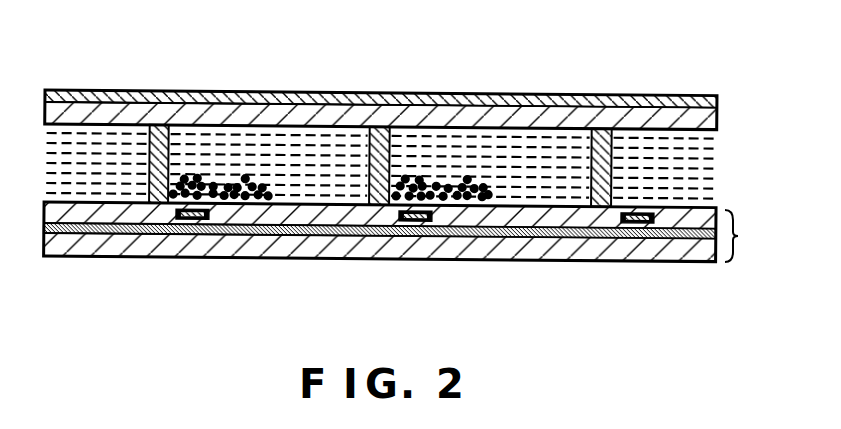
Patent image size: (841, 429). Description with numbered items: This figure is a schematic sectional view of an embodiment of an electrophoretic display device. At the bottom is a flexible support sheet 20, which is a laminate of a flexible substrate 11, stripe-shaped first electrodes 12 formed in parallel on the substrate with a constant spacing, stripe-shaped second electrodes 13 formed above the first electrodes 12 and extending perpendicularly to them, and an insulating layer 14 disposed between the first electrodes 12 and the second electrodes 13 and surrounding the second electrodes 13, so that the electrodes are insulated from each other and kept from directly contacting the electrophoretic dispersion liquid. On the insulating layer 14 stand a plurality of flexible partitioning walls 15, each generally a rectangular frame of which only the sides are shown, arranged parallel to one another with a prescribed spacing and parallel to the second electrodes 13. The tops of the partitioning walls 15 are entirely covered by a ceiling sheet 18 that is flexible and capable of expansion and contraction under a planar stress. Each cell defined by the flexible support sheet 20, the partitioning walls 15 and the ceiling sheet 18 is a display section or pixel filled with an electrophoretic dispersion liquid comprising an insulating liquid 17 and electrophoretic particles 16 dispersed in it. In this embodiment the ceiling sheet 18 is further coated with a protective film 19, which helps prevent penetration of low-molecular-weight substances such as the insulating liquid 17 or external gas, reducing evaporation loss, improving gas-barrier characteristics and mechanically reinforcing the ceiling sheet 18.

The flexible substrate 11 is at (427, 228).
The first electrode 12 is at (540, 240).
The second electrode 13 is at (643, 222).
The insulating layer 14 is at (494, 215).
The flexible partitioning wall 15 is at (603, 206).
The electrophoretic particles 16 is at (246, 199).
The insulating liquid 17 is at (338, 180).
The ceiling sheet 18 is at (318, 103).
The protective film 19 is at (465, 91).
The flexible support sheet 20 is at (753, 236).